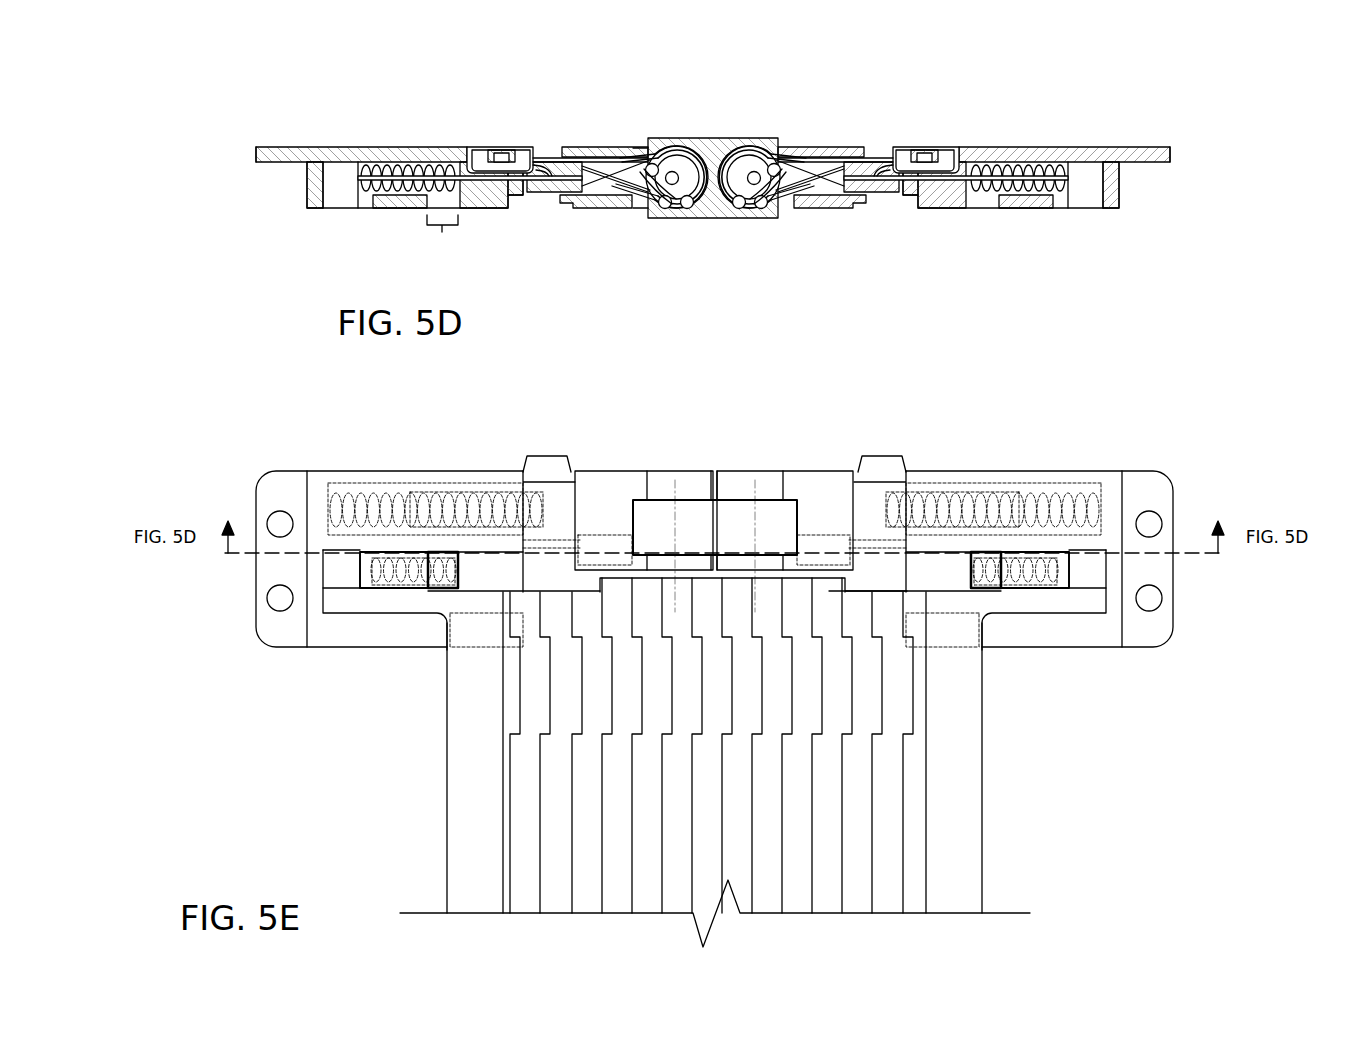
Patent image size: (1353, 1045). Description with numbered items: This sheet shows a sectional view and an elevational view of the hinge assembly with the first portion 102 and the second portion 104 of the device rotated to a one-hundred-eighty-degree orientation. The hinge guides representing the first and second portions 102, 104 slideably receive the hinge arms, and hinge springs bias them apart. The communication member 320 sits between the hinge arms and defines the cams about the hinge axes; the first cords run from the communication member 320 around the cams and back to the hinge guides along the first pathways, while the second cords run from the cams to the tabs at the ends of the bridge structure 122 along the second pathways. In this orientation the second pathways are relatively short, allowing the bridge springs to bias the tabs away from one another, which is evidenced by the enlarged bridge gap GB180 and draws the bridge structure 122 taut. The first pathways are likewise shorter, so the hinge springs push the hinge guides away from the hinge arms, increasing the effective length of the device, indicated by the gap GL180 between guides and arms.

In FIG. 5D, the first portion 102 is at (226, 195).
In FIG. 5D, the second portion 104 is at (1148, 195).
In FIG. 5E, the bridge structure 122 is at (447, 830).
In FIG. 5D, the communication member 320 is at (716, 138).
In FIG. 5E, the communication member 320 is at (703, 541).
In FIG. 5D, the bridge gap GB180 is at (460, 240).
In FIG. 5E, the gap length at 180 degrees GL180 is at (539, 452).